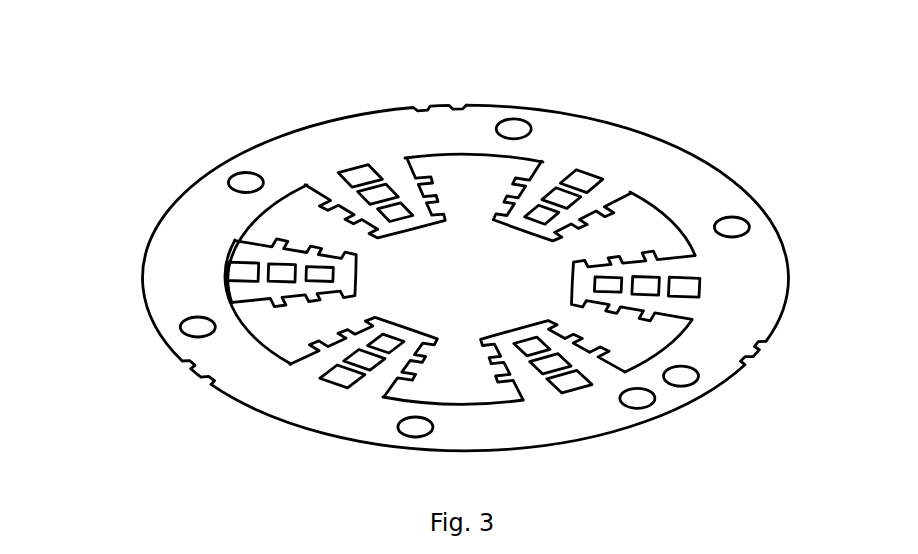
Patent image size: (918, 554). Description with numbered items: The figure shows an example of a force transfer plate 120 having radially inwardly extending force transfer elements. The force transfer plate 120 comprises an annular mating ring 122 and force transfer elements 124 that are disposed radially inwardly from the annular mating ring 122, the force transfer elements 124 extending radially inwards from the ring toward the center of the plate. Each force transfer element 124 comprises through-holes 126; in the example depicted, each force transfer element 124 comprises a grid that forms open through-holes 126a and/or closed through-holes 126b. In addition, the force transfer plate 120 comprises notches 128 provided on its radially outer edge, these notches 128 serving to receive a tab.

The force transfer plate 120 is at (252, 82).
The annular mating ring 122 is at (702, 183).
The force transfer elements 124 is at (297, 316).
The through-holes 126 is at (275, 276).
The open through-holes 126a is at (257, 243).
The closed through-holes 126b is at (248, 270).
The notches 128 is at (770, 362).